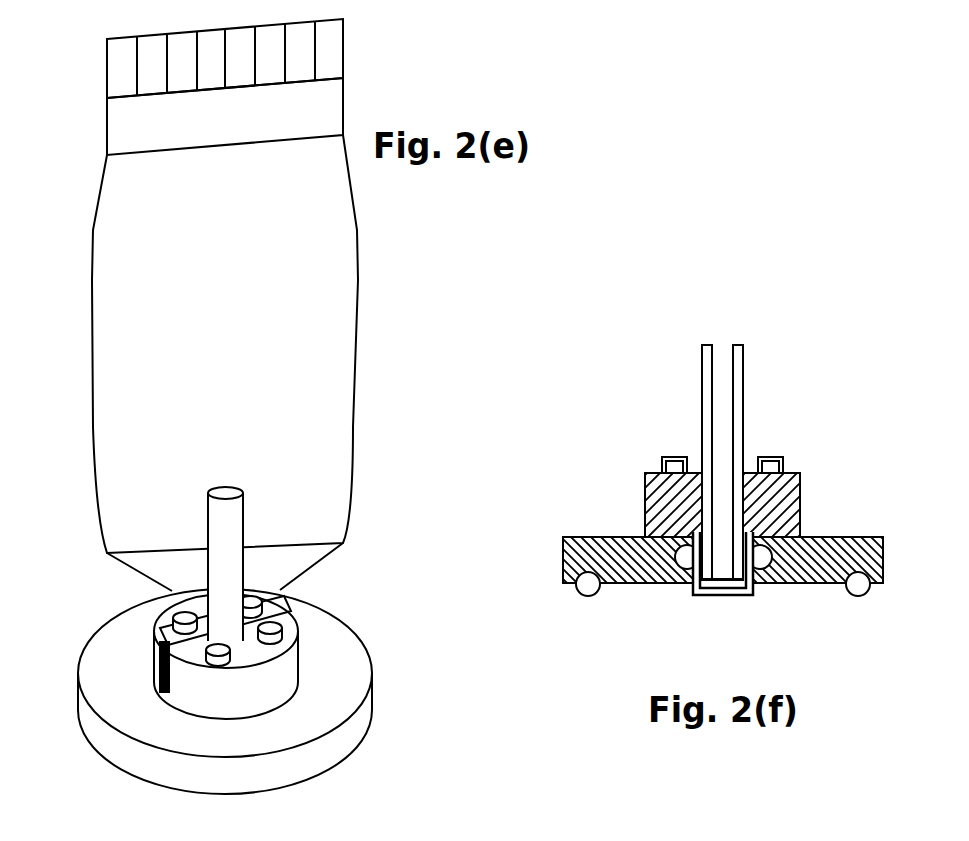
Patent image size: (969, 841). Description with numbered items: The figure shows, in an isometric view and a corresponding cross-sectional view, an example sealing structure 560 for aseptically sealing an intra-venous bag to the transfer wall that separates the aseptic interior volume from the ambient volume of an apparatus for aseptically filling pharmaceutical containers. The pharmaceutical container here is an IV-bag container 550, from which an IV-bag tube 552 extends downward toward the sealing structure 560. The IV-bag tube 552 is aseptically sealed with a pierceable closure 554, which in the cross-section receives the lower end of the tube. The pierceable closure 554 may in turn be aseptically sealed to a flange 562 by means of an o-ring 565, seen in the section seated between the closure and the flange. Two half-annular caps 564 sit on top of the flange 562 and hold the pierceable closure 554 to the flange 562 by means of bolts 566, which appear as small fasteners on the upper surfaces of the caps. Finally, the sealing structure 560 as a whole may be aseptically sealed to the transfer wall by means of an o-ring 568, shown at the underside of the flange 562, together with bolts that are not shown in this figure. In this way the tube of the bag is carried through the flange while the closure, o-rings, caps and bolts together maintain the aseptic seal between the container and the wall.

In FIG. 2E, the IV-bag container 550 is at (120, 218).
In FIG. 2E, the IV-bag tube 552 is at (237, 523).
In FIG. 2F, the IV-bag tube 552 is at (744, 350).
In FIG. 2F, the pierceable closure 554 is at (703, 590).
In FIG. 2E, the sealing structure 560 is at (246, 667).
In FIG. 2F, the sealing structure 560 is at (702, 506).
In FIG. 2E, the flange 562 is at (120, 630).
In FIG. 2F, the flange 562 is at (830, 535).
In FIG. 2E, the half-annular caps 564 is at (283, 675).
In FIG. 2F, the half-annular caps 564 is at (793, 475).
In FIG. 2F, the o-ring 565 is at (673, 562).
In FIG. 2E, the bolts 566 is at (193, 660).
In FIG. 2F, the bolts 566 is at (668, 468).
In FIG. 2F, the o-ring 568 is at (860, 584).